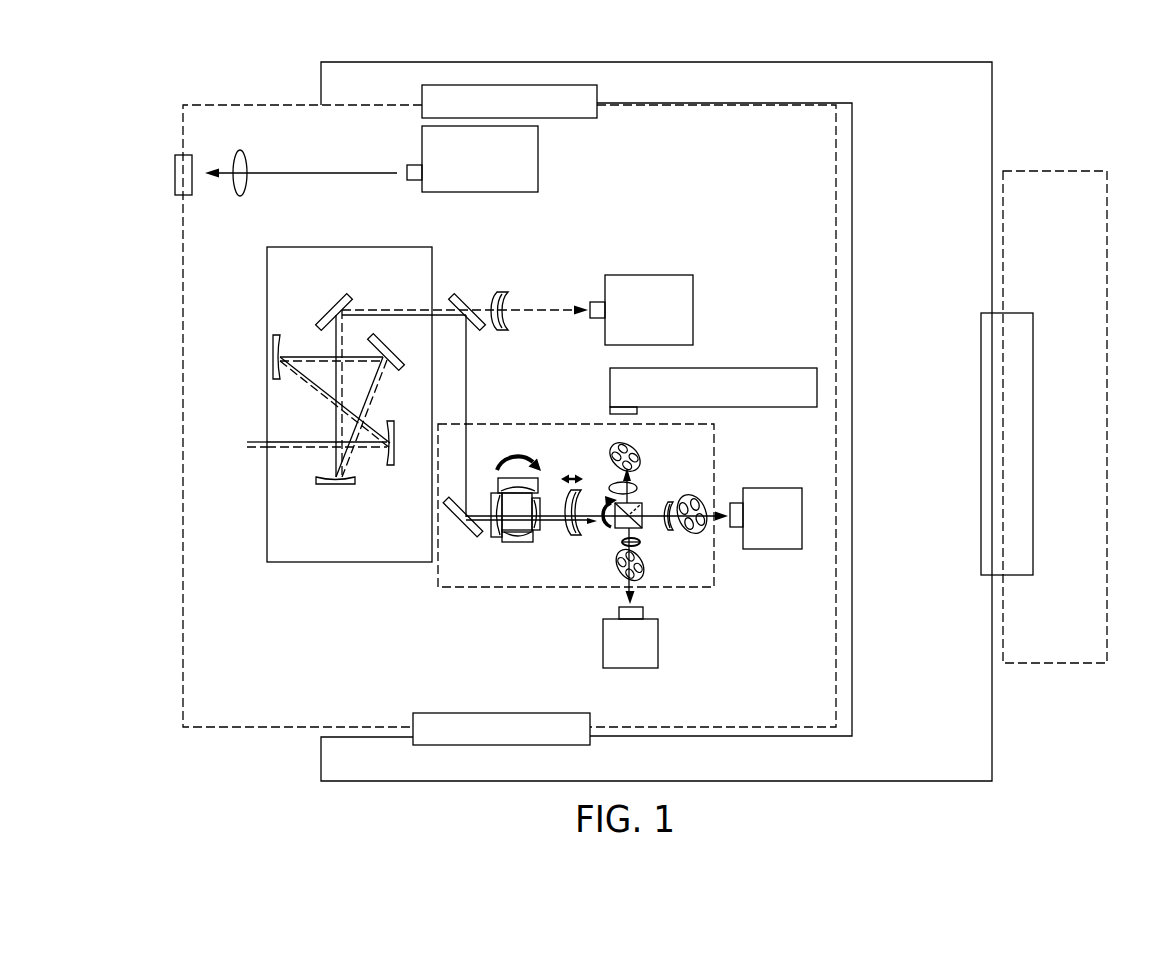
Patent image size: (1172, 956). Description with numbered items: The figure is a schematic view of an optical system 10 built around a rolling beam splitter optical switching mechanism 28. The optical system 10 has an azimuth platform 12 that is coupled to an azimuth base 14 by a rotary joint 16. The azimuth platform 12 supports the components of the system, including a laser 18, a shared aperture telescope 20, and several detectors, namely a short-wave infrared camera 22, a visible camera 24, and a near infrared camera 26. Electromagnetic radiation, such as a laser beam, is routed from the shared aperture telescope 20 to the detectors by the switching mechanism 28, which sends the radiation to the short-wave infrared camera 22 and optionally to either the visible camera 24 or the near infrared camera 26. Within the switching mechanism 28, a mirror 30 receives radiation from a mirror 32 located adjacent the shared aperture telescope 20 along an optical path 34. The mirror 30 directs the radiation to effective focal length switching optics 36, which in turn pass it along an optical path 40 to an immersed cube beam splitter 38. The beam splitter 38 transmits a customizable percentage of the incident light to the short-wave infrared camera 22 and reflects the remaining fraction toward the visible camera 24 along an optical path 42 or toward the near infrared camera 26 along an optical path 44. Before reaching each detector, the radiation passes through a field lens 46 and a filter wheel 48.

The optical system 10 is at (1026, 84).
The azimuth platform 12 is at (817, 772).
The azimuth base 14 is at (1035, 650).
The rotary joint 16 is at (1015, 537).
The laser 18 is at (532, 157).
The shared aperture telescope 20 is at (343, 252).
The short-wave infrared (SWIR) camera 22 is at (760, 549).
The visible (VIS) camera 24 is at (603, 643).
The near infrared (NIR) camera 26 is at (739, 368).
The rolling beam splitter optical switching mechanism 28 is at (530, 597).
The mirror 30 is at (465, 534).
The mirror 32 is at (468, 300).
The optical path 34 is at (467, 347).
The effective focal length (EFL) switching optics 36 is at (520, 541).
The immersed cube beam splitter 38 is at (640, 505).
The optical path 40 is at (545, 497).
The optical path 42 is at (618, 580).
The optical path 44 is at (617, 483).
The field lens 46 is at (638, 494).
The filter wheel 48 is at (628, 450).